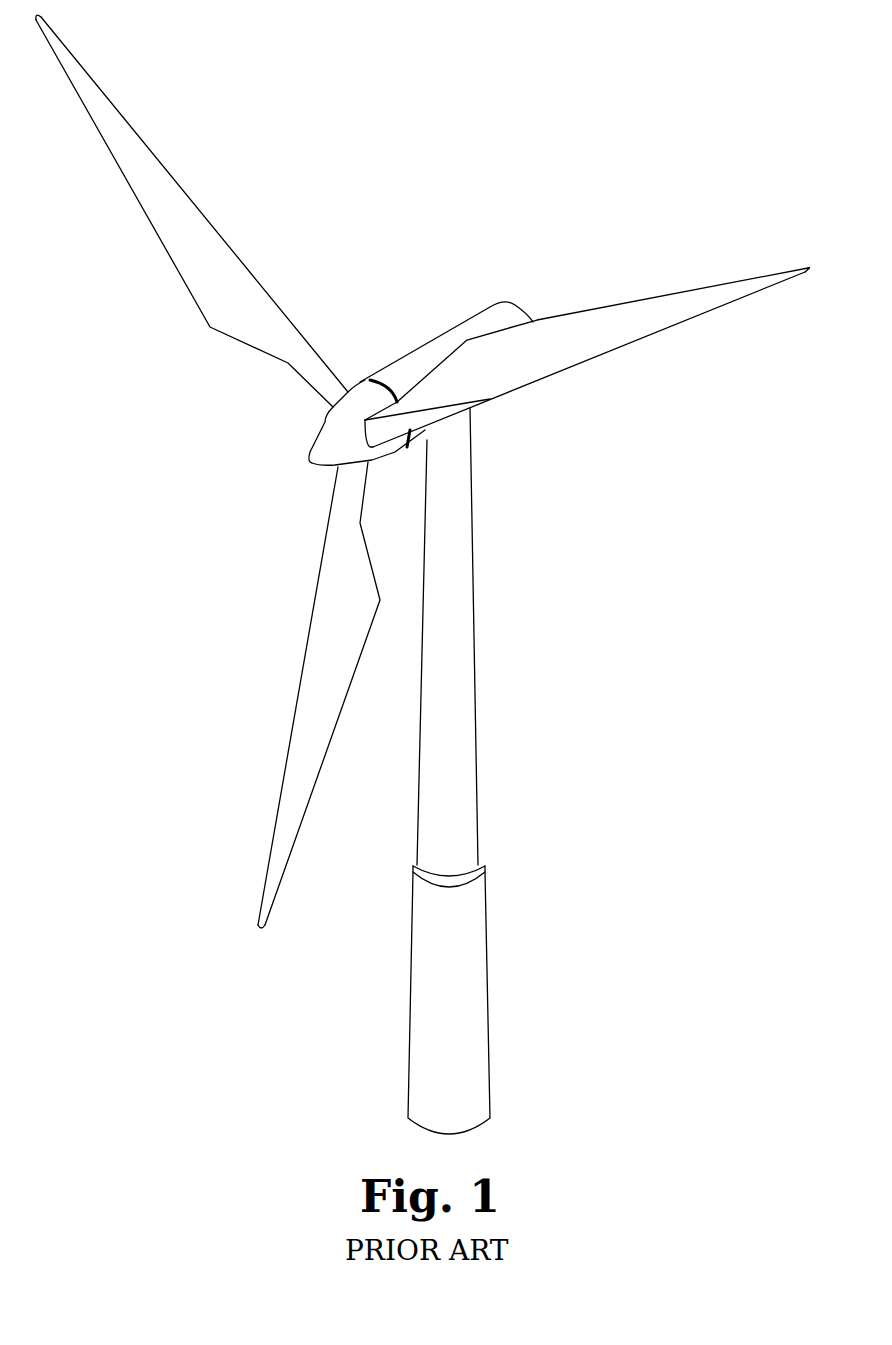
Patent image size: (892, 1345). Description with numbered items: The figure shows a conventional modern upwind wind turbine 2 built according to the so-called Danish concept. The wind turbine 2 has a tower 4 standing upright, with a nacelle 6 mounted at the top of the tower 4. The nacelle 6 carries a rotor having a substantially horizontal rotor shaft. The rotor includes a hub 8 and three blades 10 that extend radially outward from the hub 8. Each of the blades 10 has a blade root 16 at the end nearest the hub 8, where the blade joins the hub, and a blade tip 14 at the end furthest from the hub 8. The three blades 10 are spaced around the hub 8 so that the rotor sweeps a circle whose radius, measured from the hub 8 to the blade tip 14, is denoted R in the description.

The wind turbine 2 is at (568, 716).
The tower 4 is at (467, 642).
The nacelle 6 is at (413, 362).
The hub 8 is at (313, 435).
The blades 10 is at (223, 302).
The blade tip 14 is at (73, 73).
The blade root 16 is at (327, 403).